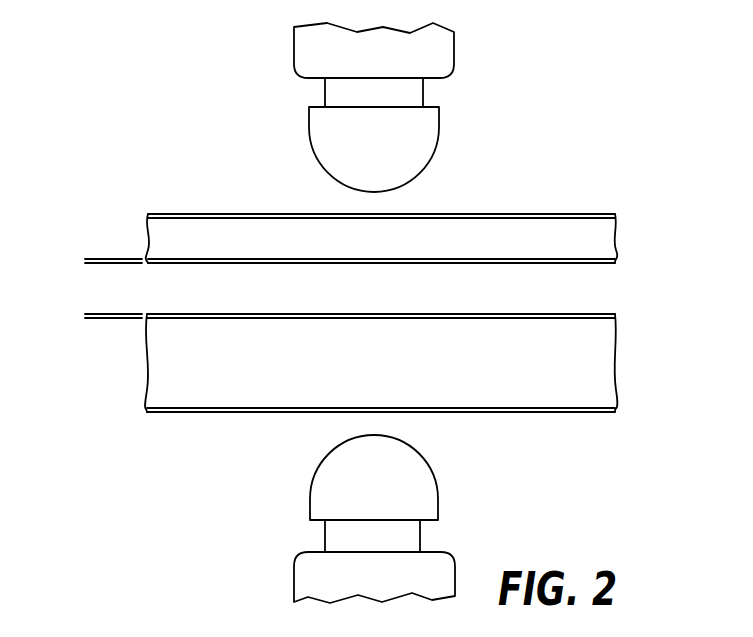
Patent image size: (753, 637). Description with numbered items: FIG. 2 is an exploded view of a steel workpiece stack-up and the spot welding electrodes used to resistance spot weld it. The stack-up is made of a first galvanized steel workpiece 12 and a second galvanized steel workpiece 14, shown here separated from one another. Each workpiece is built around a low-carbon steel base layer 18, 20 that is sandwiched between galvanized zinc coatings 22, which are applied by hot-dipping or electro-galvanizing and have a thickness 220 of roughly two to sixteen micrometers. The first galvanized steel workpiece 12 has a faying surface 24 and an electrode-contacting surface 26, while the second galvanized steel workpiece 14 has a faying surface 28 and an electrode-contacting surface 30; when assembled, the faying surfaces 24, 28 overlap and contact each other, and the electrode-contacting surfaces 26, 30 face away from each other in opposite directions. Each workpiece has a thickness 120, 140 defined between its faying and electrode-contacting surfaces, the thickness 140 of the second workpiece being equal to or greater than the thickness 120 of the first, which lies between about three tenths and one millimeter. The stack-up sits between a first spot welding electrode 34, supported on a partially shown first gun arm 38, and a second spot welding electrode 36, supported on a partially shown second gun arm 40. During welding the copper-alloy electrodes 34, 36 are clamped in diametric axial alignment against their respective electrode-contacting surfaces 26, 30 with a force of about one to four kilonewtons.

The first galvanized steel workpiece 12 is at (172, 240).
The second galvanized steel workpiece 14 is at (173, 363).
The steel base layer 18 is at (600, 241).
The steel base layer 20 is at (600, 363).
The galvanized zinc coating 22 is at (620, 215).
The faying surface 24 is at (482, 265).
The electrode-contacting surface 26 is at (512, 215).
The faying surface 28 is at (462, 314).
The electrode-contacting surface 30 is at (495, 414).
The first spot welding electrode 34 is at (385, 163).
The second spot welding electrode 36 is at (384, 497).
The first gun arm 38 is at (316, 53).
The second gun arm 40 is at (312, 578).
The thickness of first galvanized steel workpiece 120 is at (221, 190).
The thickness of second galvanized steel workpiece 140 is at (267, 318).
The thickness of zinc coating 220 is at (98, 240).